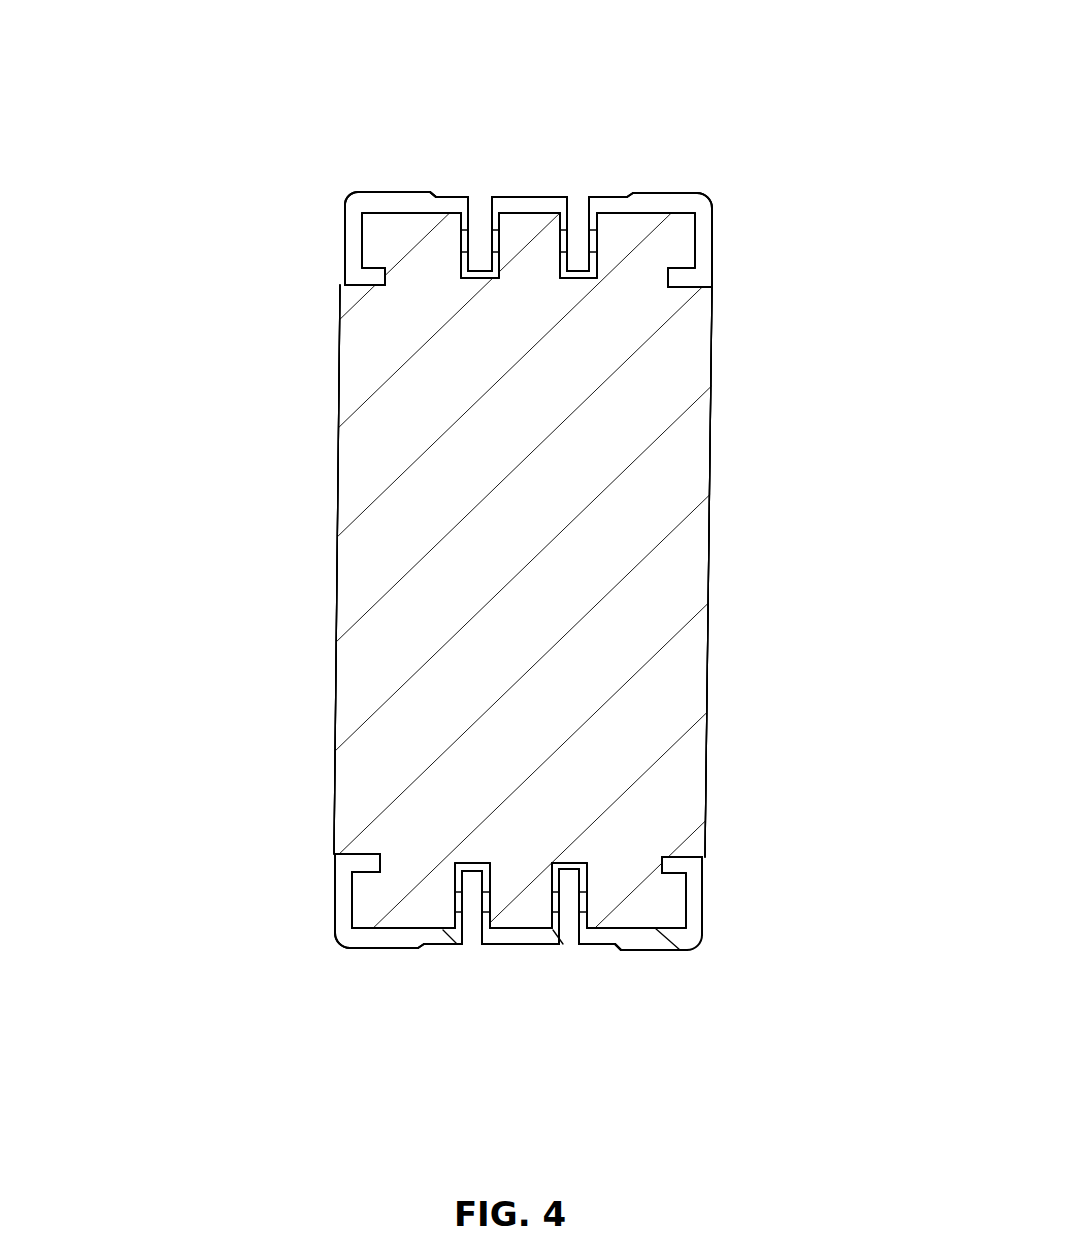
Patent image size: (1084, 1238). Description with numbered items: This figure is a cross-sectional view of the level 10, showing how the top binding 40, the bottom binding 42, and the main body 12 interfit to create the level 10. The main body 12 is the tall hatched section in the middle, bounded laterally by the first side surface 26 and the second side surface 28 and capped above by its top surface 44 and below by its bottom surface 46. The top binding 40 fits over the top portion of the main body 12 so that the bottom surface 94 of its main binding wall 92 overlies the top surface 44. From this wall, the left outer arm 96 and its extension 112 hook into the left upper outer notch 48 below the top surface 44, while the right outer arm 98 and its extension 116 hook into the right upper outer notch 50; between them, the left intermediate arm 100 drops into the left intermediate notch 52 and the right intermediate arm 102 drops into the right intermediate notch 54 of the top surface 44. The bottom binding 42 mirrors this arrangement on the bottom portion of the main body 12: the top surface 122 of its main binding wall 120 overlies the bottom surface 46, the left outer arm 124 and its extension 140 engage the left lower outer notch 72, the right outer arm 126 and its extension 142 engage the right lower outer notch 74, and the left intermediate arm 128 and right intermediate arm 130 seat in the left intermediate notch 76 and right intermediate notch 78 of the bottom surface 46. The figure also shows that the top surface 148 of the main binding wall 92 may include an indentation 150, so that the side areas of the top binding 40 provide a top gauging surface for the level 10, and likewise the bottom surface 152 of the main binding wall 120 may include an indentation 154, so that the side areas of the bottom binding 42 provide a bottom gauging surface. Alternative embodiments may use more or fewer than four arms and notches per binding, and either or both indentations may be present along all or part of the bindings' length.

The level 10 is at (143, 386).
The main body 12 is at (717, 598).
The first side surface 26 is at (338, 590).
The second side surface 28 is at (716, 537).
The top binding 40 is at (695, 192).
The bottom binding 42 is at (643, 929).
The top surface 44 is at (382, 212).
The bottom surface 46 is at (642, 955).
The left upper outer notch 48 is at (338, 280).
The right upper outer notch 50 is at (719, 282).
The left intermediate notch 52 is at (485, 292).
The right intermediate notch 54 is at (577, 292).
The left lower outer notch 72 is at (333, 858).
The right lower outer notch 74 is at (708, 861).
The left intermediate notch 76 is at (482, 845).
The right intermediate notch 78 is at (570, 849).
The main binding wall 92 is at (418, 190).
The bottom surface 94 is at (655, 216).
The left outer arm 96 is at (347, 236).
The right outer arm 98 is at (706, 240).
The left intermediate arm 100 is at (484, 226).
The right intermediate arm 102 is at (578, 228).
The extension 112 is at (352, 292).
The extension 116 is at (688, 280).
The main binding wall 120 is at (368, 947).
The top surface 122 is at (402, 928).
The left outer arm 124 is at (348, 902).
The right outer arm 126 is at (702, 898).
The left intermediate arm 128 is at (467, 912).
The right intermediate arm 130 is at (568, 912).
The extension 140 is at (353, 865).
The extension 142 is at (682, 860).
The top surface 148 is at (459, 192).
The indentation 150 is at (530, 192).
The bottom surface 152 is at (511, 945).
The indentation 154 is at (594, 943).